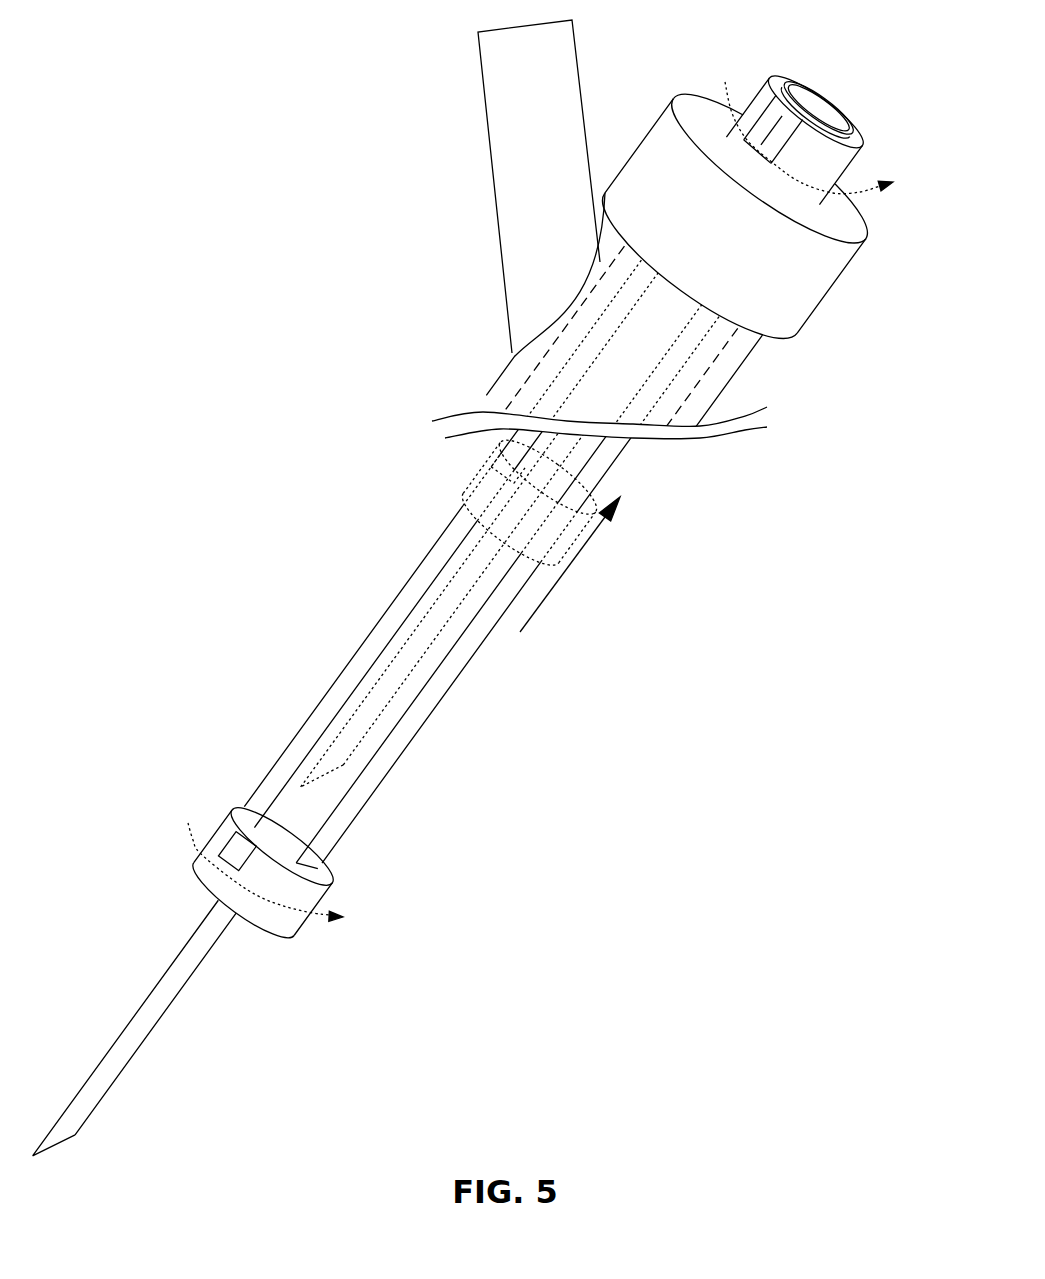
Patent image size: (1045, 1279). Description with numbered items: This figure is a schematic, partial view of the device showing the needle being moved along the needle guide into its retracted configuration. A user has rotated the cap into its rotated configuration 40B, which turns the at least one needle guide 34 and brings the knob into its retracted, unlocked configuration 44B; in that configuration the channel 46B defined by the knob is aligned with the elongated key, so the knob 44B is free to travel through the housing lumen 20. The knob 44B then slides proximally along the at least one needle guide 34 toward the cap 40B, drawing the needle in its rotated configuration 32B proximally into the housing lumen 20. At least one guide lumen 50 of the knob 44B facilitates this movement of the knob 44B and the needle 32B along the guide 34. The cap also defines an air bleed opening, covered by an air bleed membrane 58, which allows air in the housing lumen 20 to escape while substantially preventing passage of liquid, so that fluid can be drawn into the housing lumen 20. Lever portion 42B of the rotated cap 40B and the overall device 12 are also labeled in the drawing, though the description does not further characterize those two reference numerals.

The biopsy device 12 is at (478, 398).
The housing lumen 20 is at (710, 350).
The needle in retracted configuration 32B is at (193, 975).
The needle guide 34 is at (448, 688).
The cap in rotated configuration 40B is at (857, 163).
The slot 42B is at (770, 123).
The knob in retracted (unlocked) configuration 44B is at (200, 868).
The channel 46B is at (235, 852).
The guide lumen 50 is at (497, 473).
The air bleed membrane 58 is at (817, 110).